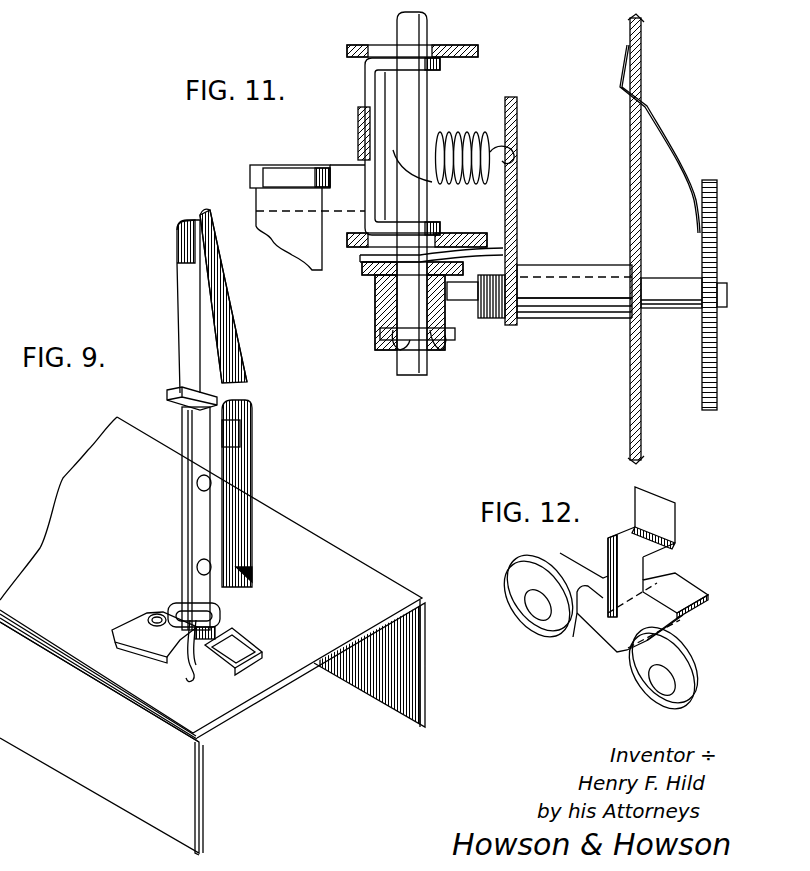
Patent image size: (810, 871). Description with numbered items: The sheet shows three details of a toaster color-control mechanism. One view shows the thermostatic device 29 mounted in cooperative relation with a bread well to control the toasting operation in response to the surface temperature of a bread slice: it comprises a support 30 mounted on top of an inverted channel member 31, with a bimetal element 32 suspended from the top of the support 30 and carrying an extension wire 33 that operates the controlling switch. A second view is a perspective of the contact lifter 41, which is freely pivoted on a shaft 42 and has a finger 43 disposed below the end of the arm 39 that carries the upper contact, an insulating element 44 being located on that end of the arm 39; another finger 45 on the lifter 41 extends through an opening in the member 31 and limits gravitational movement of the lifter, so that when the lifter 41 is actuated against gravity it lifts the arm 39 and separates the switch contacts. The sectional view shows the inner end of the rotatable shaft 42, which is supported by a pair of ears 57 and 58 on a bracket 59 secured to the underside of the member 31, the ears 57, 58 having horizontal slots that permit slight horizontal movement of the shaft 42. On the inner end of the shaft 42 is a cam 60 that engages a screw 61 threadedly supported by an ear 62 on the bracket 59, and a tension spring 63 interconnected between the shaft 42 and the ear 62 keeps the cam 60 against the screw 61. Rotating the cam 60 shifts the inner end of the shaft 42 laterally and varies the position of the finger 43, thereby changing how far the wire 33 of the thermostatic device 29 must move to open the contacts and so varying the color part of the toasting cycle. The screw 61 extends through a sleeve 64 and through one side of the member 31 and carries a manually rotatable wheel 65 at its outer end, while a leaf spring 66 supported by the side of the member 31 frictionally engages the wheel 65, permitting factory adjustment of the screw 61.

In FIG. 9, the thermostatic device 29 is at (248, 469).
In FIG. 9, the support 30 is at (225, 328).
In FIG. 9, the inverted channel member 31 is at (323, 560).
In FIG. 9, the bimetal element 32 is at (187, 286).
In FIG. 9, the extension wire 33 is at (188, 527).
In FIG. 11, the arm 39 is at (290, 228).
In FIG. 11, the contact lifter 41 is at (362, 104).
In FIG. 9, the contact lifter 41 is at (222, 650).
In FIG. 12, the contact lifter 41 is at (595, 625).
In FIG. 11, the shaft 42 is at (420, 22).
In FIG. 11, the finger 43 is at (345, 177).
In FIG. 12, the finger 43 is at (683, 588).
In FIG. 11, the insulating element 44 is at (277, 177).
In FIG. 9, the finger 45 is at (212, 672).
In FIG. 12, the finger 45 is at (678, 515).
In FIG. 11, the ear 57 is at (478, 49).
In FIG. 11, the ear 58 is at (467, 233).
In FIG. 11, the bracket 59 is at (517, 200).
In FIG. 11, the cam 60 is at (378, 310).
In FIG. 11, the screw 61 is at (490, 318).
In FIG. 11, the ear 62 is at (517, 108).
In FIG. 11, the tension spring 63 is at (457, 133).
In FIG. 11, the sleeve 64 is at (565, 285).
In FIG. 11, the wheel 65 is at (703, 370).
In FIG. 11, the leaf spring 66 is at (668, 142).